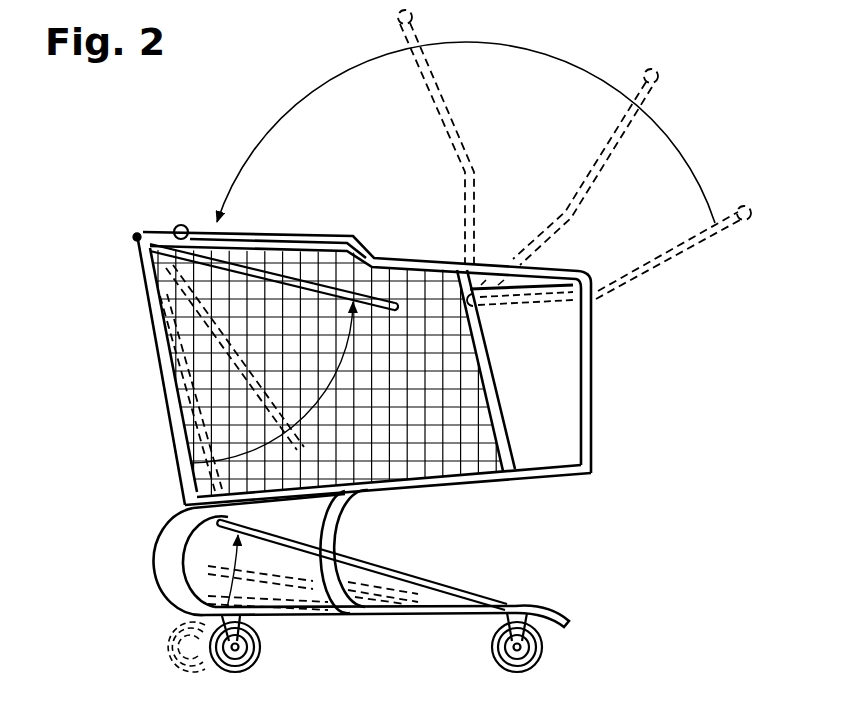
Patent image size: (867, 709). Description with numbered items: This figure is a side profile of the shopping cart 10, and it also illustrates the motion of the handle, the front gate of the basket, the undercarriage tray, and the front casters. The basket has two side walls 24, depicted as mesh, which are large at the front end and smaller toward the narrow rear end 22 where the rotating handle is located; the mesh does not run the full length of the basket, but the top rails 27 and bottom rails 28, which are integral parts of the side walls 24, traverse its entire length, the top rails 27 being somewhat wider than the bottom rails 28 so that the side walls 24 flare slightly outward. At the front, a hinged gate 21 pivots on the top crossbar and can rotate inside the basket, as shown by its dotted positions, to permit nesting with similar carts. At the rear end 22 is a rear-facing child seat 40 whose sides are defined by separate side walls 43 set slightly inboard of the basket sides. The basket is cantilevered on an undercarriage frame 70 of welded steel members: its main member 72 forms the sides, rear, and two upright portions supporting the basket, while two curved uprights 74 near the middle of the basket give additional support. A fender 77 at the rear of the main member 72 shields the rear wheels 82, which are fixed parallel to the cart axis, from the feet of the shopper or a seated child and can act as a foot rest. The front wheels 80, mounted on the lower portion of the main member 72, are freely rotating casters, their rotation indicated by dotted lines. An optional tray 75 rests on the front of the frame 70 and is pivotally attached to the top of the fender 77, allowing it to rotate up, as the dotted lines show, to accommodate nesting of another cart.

The shopping cart 10 is at (340, 213).
The hinged gate 21 is at (130, 318).
The narrow end 22 is at (663, 325).
The side walls 24 is at (373, 445).
The top rails 27 is at (492, 262).
The bottom rails 28 is at (483, 483).
The child seat 40 is at (605, 423).
The side walls 43 is at (553, 395).
The undercarriage frame 70 is at (582, 552).
The main member 72 is at (447, 623).
The curved uprights 74 is at (340, 528).
The tray 75 is at (423, 577).
The fender 77 is at (560, 617).
The front wheels 80 is at (263, 658).
The rear wheels 82 is at (543, 652).